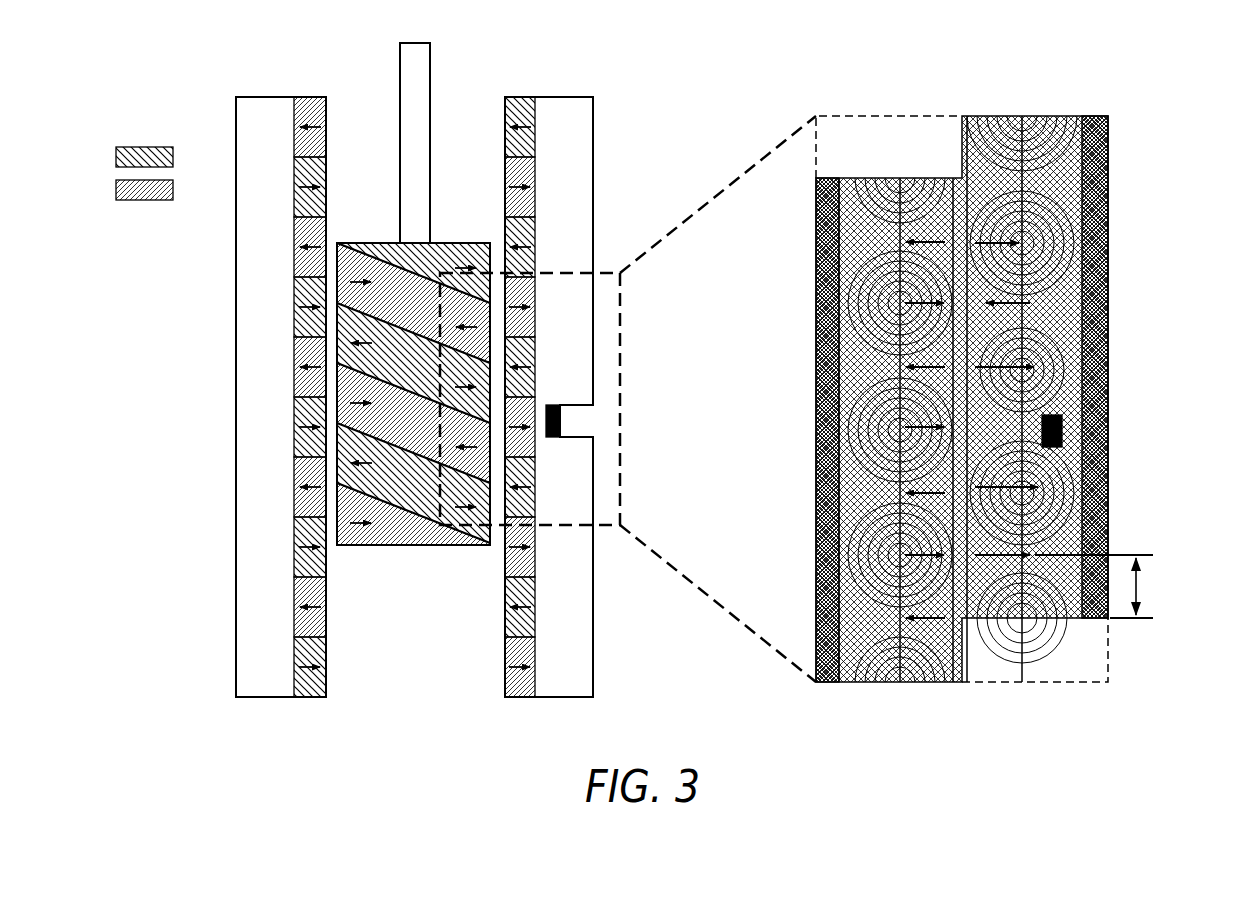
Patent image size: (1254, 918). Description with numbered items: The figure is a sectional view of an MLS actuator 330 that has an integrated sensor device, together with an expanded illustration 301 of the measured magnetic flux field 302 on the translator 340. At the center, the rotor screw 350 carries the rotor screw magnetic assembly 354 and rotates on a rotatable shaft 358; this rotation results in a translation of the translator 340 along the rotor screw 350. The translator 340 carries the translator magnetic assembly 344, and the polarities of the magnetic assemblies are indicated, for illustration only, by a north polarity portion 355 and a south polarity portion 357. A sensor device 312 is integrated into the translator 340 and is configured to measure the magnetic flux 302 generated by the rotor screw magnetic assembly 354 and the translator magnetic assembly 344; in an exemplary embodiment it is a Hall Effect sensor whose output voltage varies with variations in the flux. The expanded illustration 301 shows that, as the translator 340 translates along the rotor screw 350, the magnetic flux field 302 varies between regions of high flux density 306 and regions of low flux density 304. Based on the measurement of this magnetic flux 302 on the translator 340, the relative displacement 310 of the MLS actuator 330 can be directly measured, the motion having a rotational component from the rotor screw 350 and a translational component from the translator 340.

The MLS actuator 330 is at (213, 367).
The rotatable shaft 358 is at (434, 107).
The rotor screw magnetic assembly 354 is at (344, 462).
The translator magnetic assembly 344 is at (298, 428).
The translator 340 is at (1057, 558).
The sensor device 312 is at (1040, 430).
The expanded illustration 301 is at (606, 268).
The magnetic flux field 302 is at (1022, 244).
The region of low flux density 304 is at (1112, 259).
The region of high flux density 306 is at (1039, 370).
The rotor screw 350 is at (394, 518).
The relative displacement 310 is at (1138, 587).
The north polarity portion 355 is at (218, 172).
The south polarity portion 357 is at (218, 205).